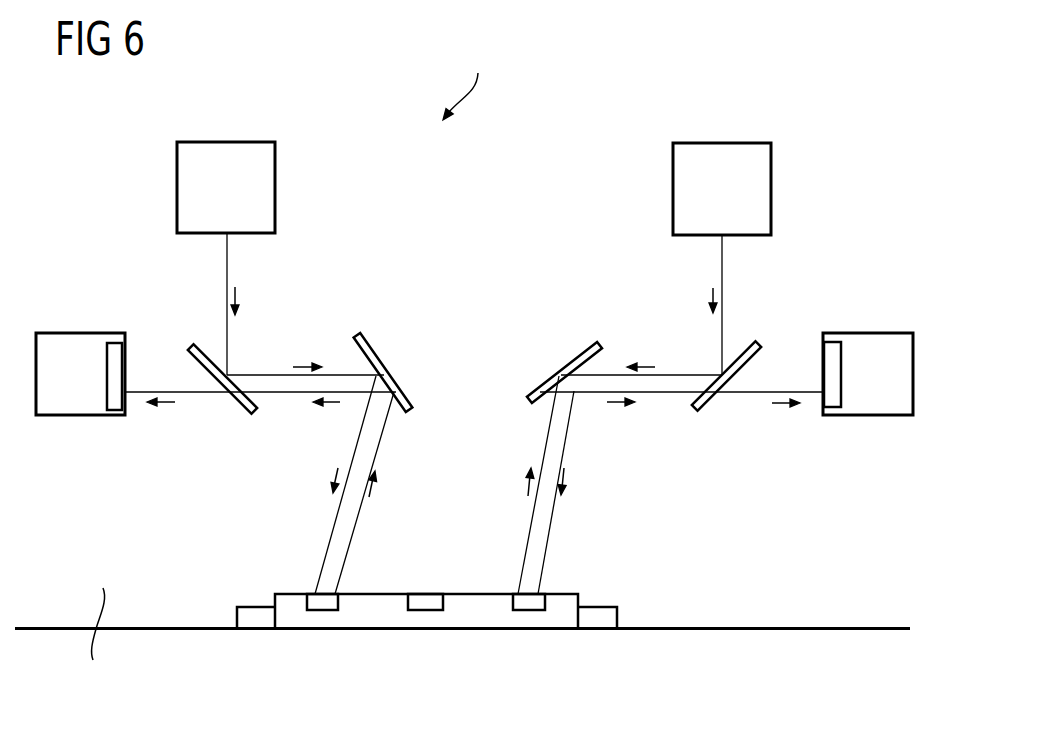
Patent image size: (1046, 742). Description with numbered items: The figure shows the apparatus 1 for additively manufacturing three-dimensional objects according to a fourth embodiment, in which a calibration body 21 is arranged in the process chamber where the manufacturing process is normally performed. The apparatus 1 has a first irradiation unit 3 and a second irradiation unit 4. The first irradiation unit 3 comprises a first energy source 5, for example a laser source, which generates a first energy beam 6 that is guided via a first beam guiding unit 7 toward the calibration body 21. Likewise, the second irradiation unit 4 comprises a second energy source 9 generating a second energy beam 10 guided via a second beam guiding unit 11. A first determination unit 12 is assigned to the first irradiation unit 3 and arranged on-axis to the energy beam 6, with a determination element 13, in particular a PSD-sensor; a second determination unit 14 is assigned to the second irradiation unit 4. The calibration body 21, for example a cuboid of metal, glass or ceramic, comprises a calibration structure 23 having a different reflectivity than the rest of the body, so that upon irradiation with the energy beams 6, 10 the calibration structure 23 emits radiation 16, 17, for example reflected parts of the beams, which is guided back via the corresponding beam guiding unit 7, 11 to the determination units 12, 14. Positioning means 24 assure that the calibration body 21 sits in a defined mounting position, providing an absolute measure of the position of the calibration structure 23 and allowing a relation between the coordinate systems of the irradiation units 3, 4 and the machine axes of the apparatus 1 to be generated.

The apparatus 1 is at (836, 112).
The first irradiation unit 3 is at (340, 264).
The second irradiation unit 4 is at (616, 264).
The first energy source 5 is at (220, 142).
The first energy beam 6 is at (227, 264).
The first beam guiding unit 7 is at (383, 338).
The second energy source 9 is at (718, 142).
The second energy beam 10 is at (723, 272).
The second beam guiding unit 11 is at (568, 337).
The first determination unit 12 is at (65, 417).
The determination element 13 is at (118, 397).
The second determination unit 14 is at (888, 417).
The radiation 16 is at (293, 392).
The radiation 17 is at (527, 557).
The calibration body 21 is at (628, 572).
The calibration structure 23 is at (328, 625).
The positioning means 24 is at (257, 620).